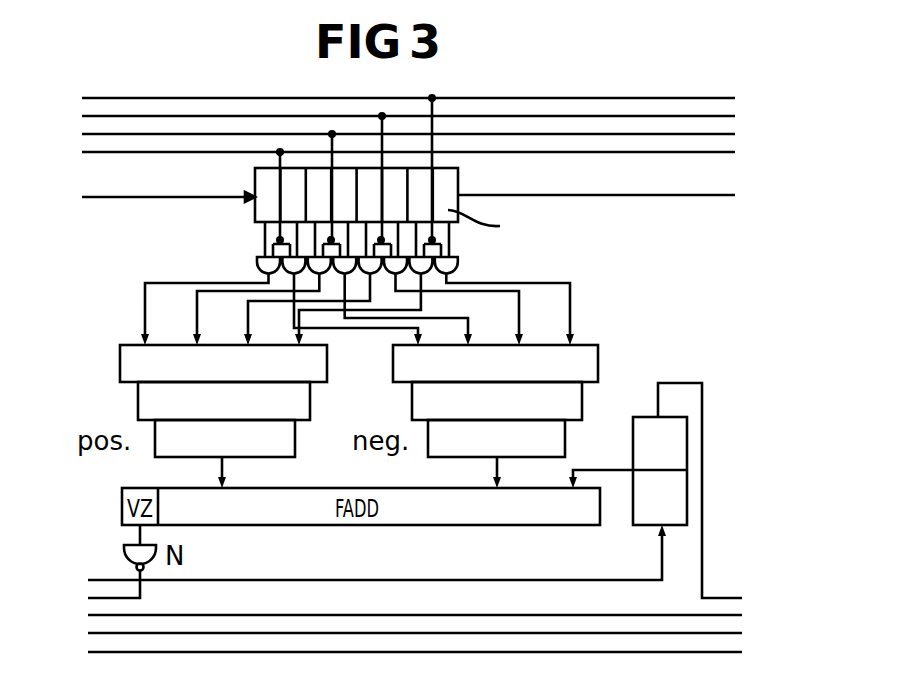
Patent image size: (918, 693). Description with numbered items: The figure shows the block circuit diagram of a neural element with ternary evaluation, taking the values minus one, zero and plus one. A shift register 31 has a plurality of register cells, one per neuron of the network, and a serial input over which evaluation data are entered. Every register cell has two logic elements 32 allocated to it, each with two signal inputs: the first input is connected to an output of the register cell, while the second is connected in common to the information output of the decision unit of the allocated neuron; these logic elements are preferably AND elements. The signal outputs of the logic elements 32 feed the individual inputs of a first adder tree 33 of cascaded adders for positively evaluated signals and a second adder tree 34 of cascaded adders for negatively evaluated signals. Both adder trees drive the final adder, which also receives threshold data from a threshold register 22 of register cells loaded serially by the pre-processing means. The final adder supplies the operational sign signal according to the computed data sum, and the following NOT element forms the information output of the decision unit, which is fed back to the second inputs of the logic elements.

The shift register 31 is at (458, 183).
The logic elements 32 is at (257, 265).
The first adder tree 33 is at (122, 395).
The second adder tree 34 is at (610, 351).
The threshold register 22 is at (687, 470).